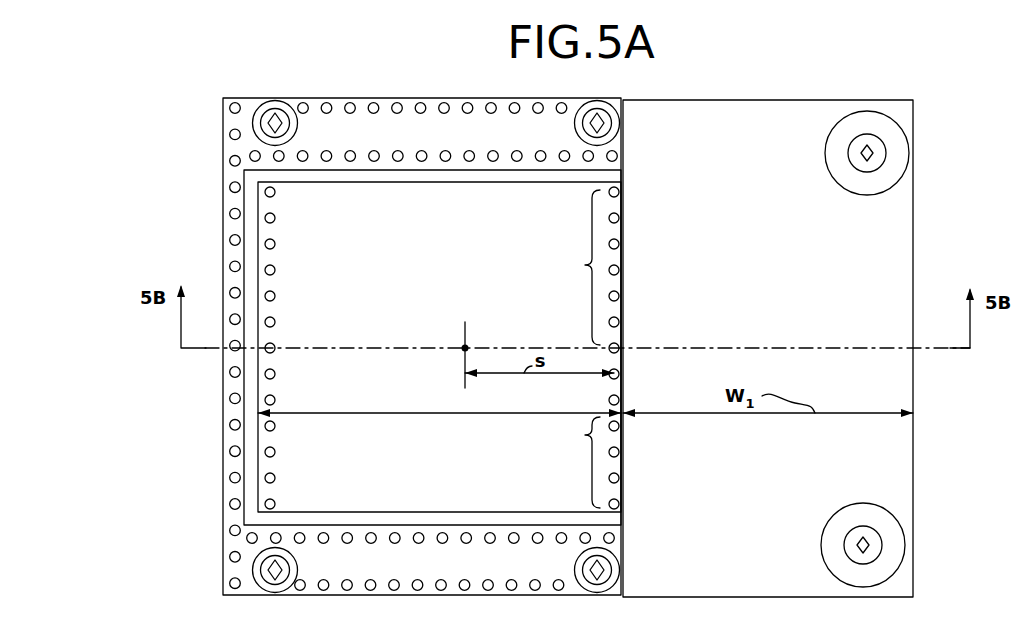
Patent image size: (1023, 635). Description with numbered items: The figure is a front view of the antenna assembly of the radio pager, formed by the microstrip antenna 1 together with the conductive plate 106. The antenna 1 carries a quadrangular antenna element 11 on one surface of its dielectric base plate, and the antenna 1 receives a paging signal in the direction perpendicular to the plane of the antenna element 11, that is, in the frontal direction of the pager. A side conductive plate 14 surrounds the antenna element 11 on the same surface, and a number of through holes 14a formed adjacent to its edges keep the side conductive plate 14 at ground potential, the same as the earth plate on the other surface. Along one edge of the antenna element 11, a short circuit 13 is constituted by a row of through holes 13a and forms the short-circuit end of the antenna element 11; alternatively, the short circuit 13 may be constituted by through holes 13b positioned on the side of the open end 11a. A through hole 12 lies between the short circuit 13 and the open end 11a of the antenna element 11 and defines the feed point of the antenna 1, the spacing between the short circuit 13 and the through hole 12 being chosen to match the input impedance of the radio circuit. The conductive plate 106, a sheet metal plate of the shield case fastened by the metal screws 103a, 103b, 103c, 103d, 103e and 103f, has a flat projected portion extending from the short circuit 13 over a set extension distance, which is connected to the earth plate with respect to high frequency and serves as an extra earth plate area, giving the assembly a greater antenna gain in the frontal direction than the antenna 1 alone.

The microstrip antenna 1 is at (357, 98).
The antenna element 11 is at (257, 465).
The open end 11a is at (268, 212).
The through hole 12 is at (468, 346).
The short circuit 13 is at (584, 348).
The through holes 13a is at (622, 347).
The through holes 13b is at (272, 346).
The side conductive plate 14 is at (515, 105).
The through holes 14a is at (236, 352).
The metal screw 103a is at (273, 593).
The metal screw 103b is at (615, 565).
The metal screw 103c is at (270, 102).
The metal screw 103d is at (600, 101).
The metal screw 103e is at (866, 527).
The metal screw 103f is at (878, 136).
The conductive plate 106 is at (915, 145).